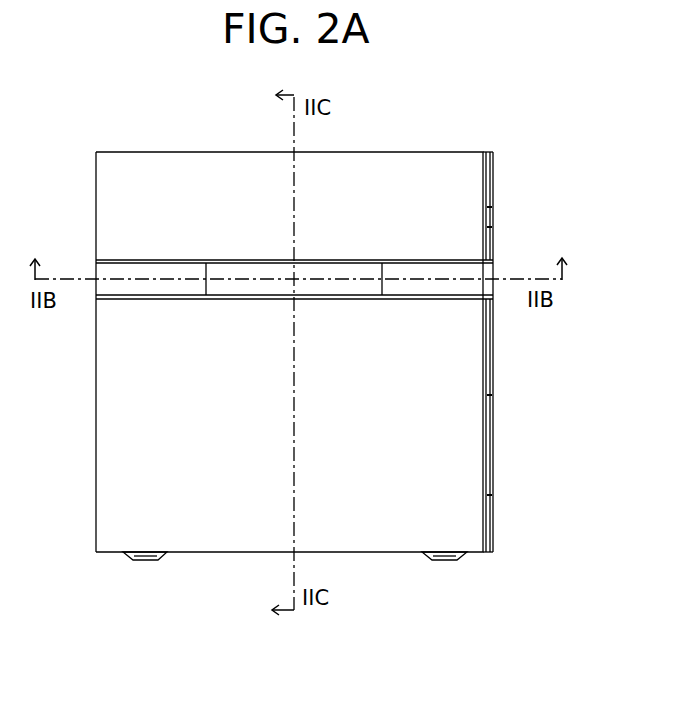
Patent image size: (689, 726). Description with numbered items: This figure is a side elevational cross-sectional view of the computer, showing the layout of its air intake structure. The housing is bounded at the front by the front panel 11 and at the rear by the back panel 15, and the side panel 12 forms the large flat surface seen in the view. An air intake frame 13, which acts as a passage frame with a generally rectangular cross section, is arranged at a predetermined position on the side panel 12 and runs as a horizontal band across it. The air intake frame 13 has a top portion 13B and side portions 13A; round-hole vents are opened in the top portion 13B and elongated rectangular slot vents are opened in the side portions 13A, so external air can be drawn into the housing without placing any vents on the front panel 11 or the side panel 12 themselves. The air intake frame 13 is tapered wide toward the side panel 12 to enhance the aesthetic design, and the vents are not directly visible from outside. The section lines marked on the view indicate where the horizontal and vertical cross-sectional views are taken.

The front panel 11 is at (494, 228).
The side panel 12 is at (109, 497).
The air intake frame 13 is at (380, 272).
The side portion 13A is at (206, 286).
The top portion 13B is at (250, 265).
The back panel 15 is at (96, 393).